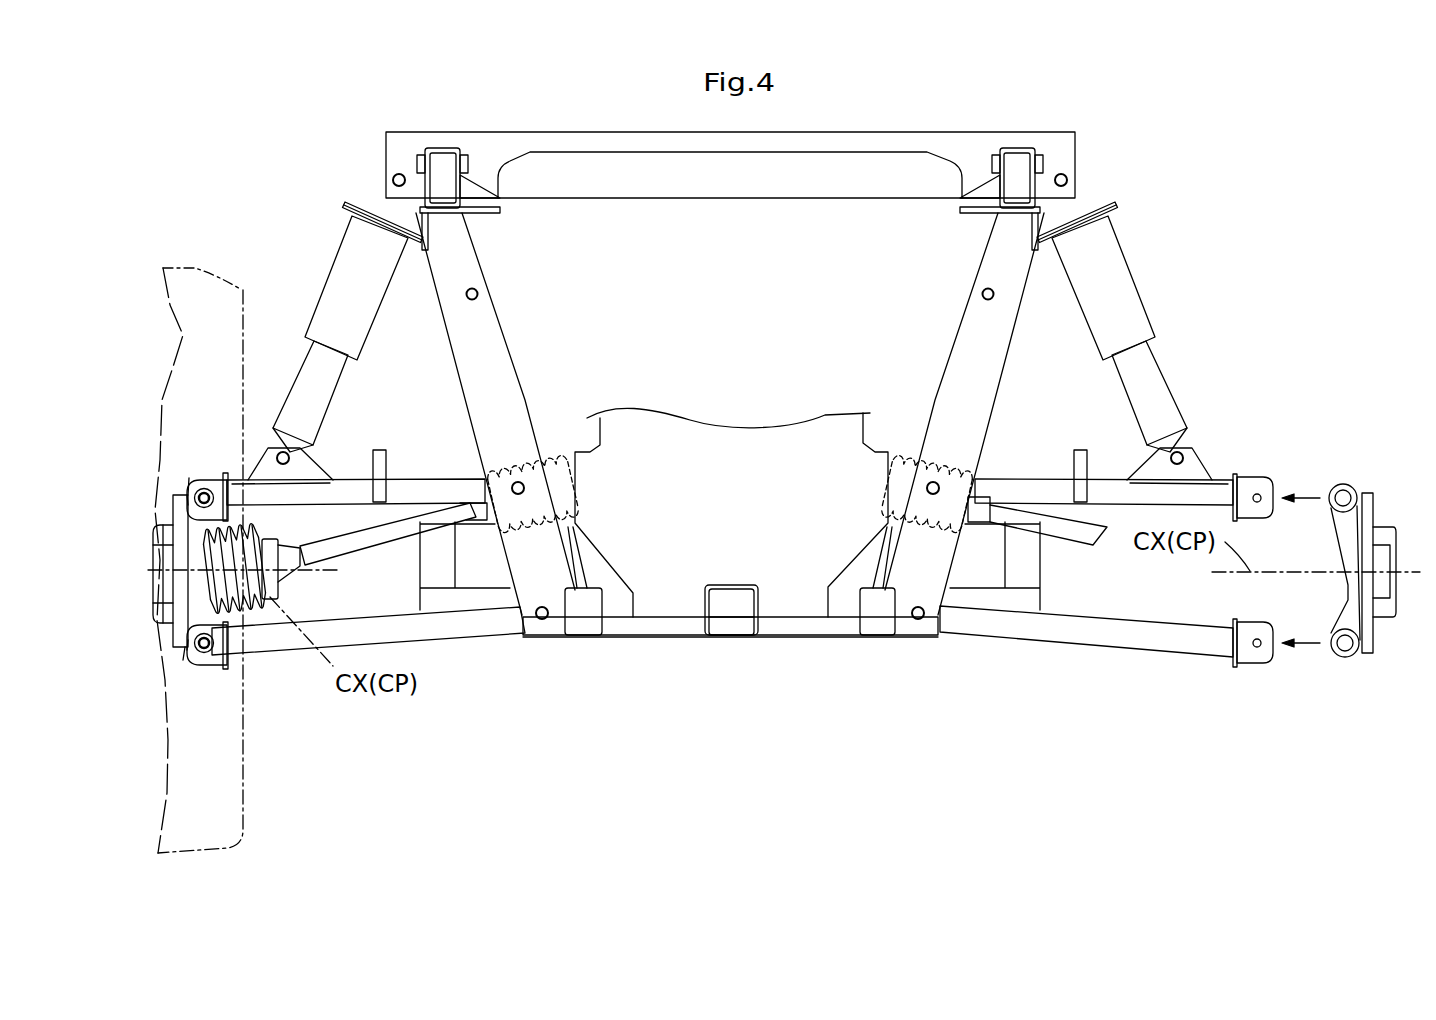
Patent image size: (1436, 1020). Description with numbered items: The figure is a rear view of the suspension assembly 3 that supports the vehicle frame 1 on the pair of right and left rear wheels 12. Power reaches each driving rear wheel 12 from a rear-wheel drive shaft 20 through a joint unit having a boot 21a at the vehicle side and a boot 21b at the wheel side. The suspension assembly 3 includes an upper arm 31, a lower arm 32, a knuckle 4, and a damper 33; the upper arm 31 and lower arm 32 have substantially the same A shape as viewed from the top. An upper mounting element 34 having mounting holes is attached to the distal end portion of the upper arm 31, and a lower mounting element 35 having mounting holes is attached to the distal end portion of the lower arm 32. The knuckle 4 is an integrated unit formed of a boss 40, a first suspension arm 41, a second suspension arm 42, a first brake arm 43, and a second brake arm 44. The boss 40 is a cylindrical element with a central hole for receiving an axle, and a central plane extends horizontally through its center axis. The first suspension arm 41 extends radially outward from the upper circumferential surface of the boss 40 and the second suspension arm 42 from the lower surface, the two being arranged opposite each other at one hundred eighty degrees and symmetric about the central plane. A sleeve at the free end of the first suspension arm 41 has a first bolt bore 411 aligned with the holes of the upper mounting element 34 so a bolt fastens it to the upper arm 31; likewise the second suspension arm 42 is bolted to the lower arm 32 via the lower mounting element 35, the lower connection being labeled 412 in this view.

The vehicle frame 1 is at (720, 641).
The suspension assembly 3 is at (397, 709).
The knuckle 4 is at (173, 662).
The rear wheel 12 is at (180, 260).
The rear-wheel drive shaft 20 is at (372, 540).
The boot 21a is at (538, 460).
The boot 21b is at (290, 613).
The upper arm 31 is at (420, 478).
The lower arm 32 is at (415, 632).
The damper 33 is at (332, 297).
The upper mounting element 34 is at (208, 478).
The lower mounting element 35 is at (212, 666).
The boss 40 is at (177, 493).
The first suspension arm 41 is at (226, 522).
The second suspension arm 42 is at (217, 617).
The first brake arm 43 is at (189, 478).
The second brake arm 44 is at (183, 657).
The first bolt bore 411 is at (1253, 484).
The lower connecting portion 412 is at (1340, 655).